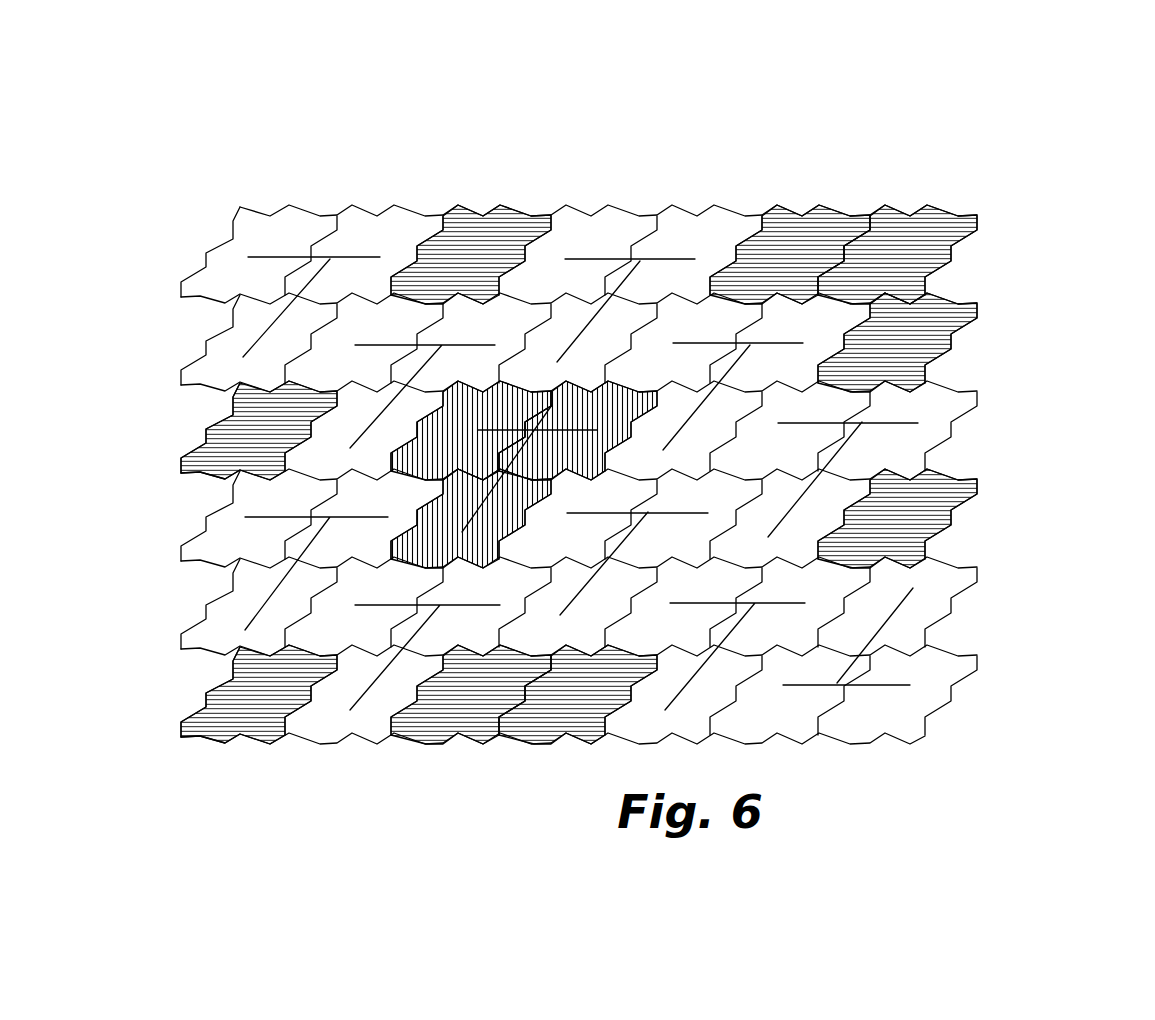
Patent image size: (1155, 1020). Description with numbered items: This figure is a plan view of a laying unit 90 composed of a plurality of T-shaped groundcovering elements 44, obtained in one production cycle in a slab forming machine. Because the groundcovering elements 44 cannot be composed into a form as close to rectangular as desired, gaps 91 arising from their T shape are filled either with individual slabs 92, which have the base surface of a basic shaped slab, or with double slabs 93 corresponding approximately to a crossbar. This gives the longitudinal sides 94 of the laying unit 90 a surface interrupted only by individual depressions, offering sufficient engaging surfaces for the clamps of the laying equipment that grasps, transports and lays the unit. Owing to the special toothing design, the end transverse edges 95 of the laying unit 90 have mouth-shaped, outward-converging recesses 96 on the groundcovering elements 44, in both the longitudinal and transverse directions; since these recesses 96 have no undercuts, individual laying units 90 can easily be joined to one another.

The laying unit 90 is at (187, 745).
The gaps 91 is at (482, 204).
The individual slabs 92 is at (487, 262).
The double slabs 93 is at (915, 258).
The longitudinal sides 94 is at (623, 199).
The end transverse edges 95 is at (170, 606).
The recesses 96 is at (953, 363).
The groundcovering elements 44 is at (493, 422).